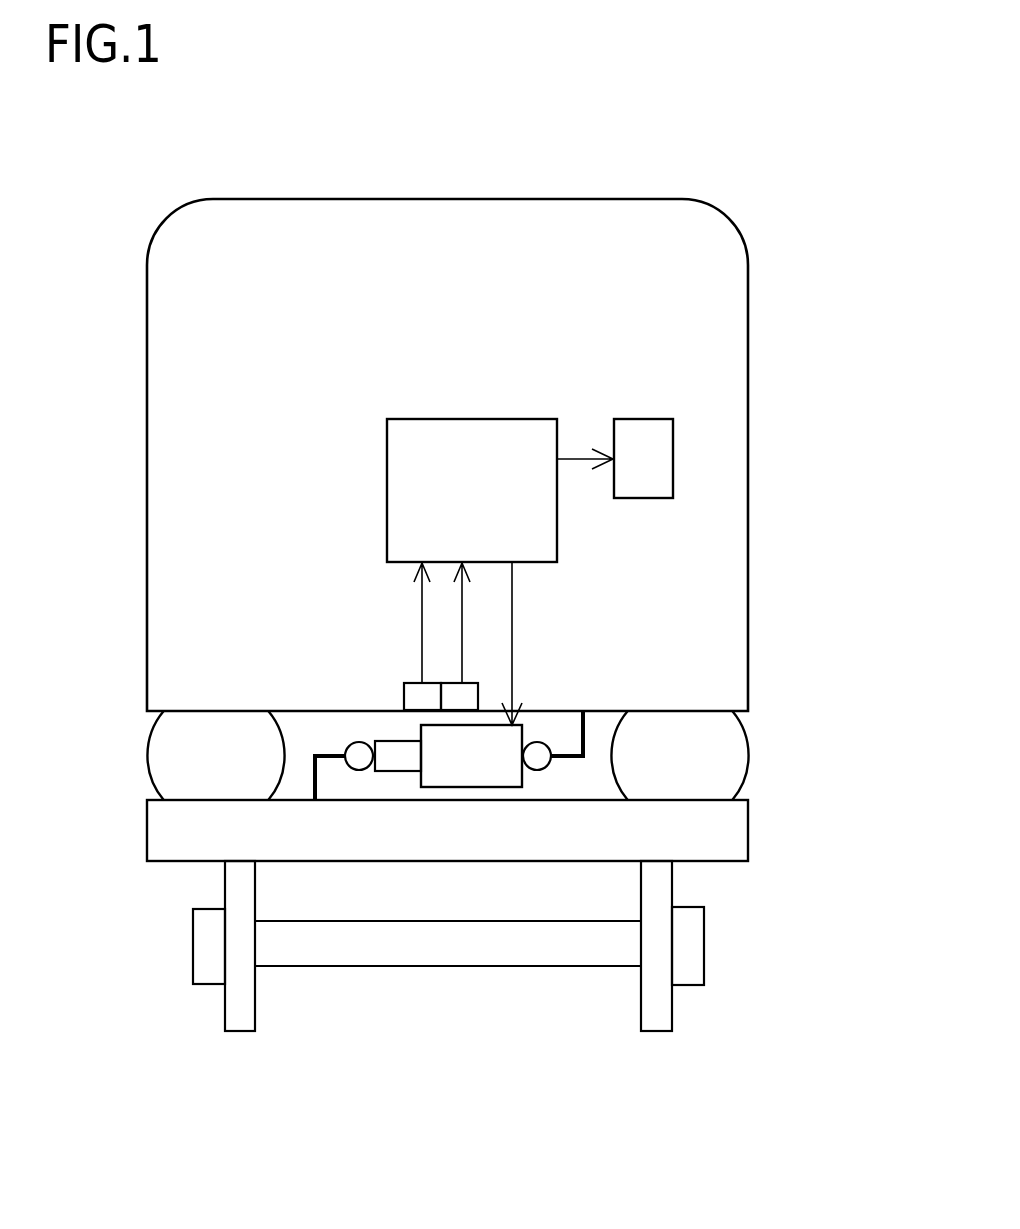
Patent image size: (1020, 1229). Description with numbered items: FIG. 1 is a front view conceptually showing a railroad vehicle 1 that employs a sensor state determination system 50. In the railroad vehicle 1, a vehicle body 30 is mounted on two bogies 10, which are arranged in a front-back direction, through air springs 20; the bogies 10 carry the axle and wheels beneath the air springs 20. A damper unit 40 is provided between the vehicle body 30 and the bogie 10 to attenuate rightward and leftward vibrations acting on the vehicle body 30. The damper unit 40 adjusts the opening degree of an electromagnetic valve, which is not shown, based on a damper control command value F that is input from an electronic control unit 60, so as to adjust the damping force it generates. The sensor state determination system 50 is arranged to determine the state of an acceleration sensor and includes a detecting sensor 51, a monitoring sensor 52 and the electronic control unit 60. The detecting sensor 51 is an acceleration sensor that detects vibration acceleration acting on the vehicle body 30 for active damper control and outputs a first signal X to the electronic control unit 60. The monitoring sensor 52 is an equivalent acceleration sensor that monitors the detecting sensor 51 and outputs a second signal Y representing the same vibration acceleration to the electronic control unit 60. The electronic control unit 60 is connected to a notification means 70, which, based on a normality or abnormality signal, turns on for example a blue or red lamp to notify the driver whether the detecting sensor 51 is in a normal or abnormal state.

The railroad vehicle 1 is at (645, 165).
The bogie 10 is at (727, 832).
The air spring 20 is at (167, 756).
The vehicle body 30 is at (172, 352).
The damper unit 40 is at (455, 787).
The sensor state determination system 50 is at (426, 593).
The detecting sensor 51 is at (478, 697).
The monitoring sensor 52 is at (404, 697).
The electronic control unit (ECU) 60 is at (478, 419).
The notification means 70 is at (651, 419).